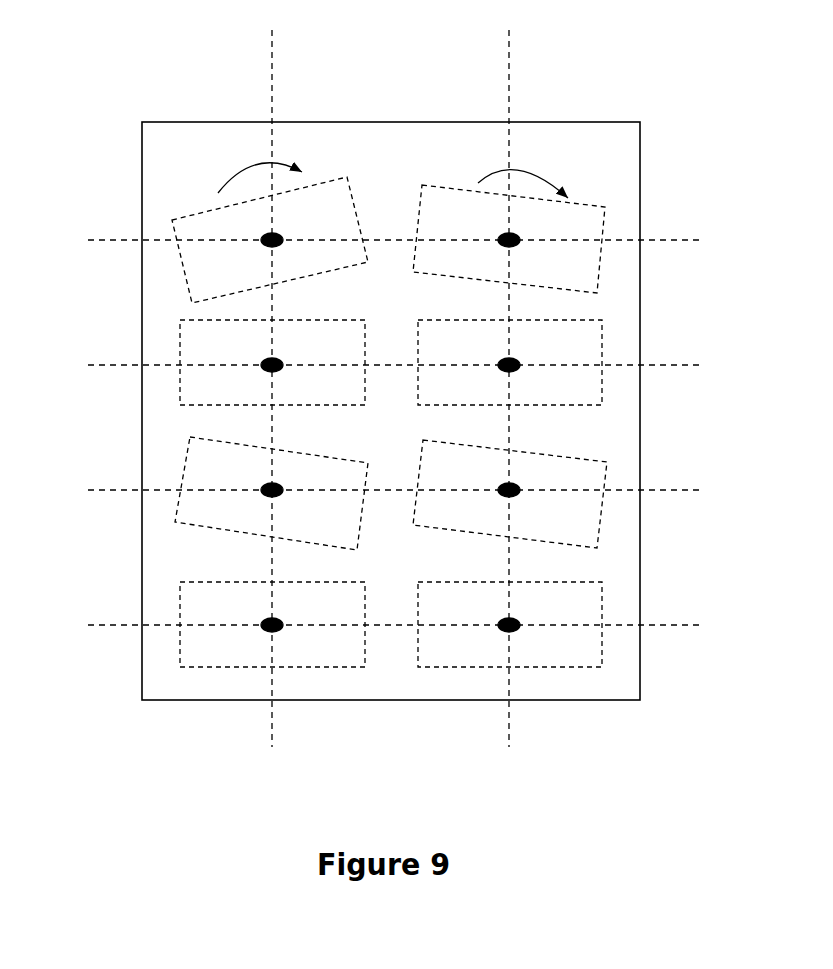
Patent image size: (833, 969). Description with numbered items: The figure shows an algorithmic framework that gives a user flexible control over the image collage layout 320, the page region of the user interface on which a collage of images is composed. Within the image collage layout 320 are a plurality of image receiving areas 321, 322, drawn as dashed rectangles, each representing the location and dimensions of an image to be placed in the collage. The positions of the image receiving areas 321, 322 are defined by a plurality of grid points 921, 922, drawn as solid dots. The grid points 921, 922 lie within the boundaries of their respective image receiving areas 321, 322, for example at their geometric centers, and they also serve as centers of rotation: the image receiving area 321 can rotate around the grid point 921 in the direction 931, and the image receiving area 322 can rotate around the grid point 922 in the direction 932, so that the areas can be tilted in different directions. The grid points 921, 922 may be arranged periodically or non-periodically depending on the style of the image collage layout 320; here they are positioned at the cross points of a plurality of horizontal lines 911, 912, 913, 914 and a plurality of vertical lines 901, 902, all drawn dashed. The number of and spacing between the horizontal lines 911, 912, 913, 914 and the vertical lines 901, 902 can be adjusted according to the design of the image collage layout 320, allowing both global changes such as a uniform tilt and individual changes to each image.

The image collage layout 320 is at (603, 120).
The image receiving area 321 is at (358, 208).
The image receiving area 322 is at (603, 230).
The vertical line 901 is at (275, 75).
The vertical line 902 is at (511, 75).
The horizontal line 911 is at (682, 242).
The horizontal line 912 is at (683, 366).
The horizontal line 913 is at (683, 492).
The horizontal line 914 is at (685, 626).
The grid point 921 is at (262, 240).
The grid point 922 is at (522, 245).
The direction 931 is at (251, 163).
The direction 932 is at (525, 170).